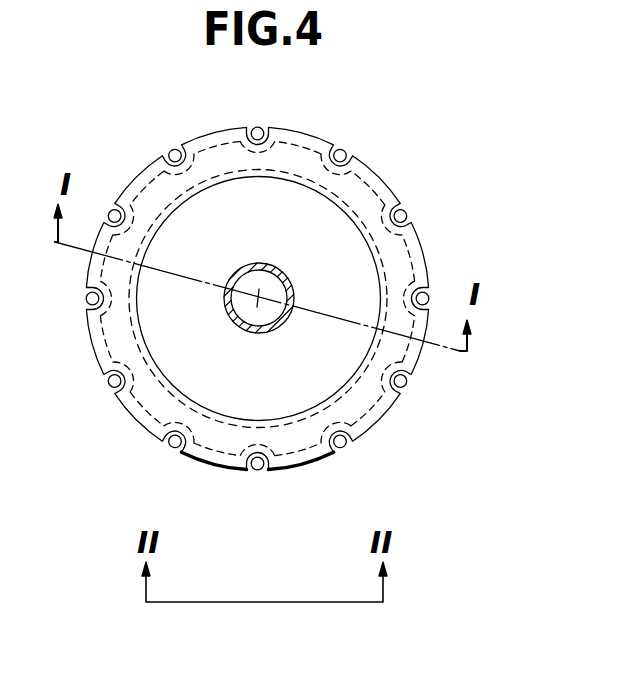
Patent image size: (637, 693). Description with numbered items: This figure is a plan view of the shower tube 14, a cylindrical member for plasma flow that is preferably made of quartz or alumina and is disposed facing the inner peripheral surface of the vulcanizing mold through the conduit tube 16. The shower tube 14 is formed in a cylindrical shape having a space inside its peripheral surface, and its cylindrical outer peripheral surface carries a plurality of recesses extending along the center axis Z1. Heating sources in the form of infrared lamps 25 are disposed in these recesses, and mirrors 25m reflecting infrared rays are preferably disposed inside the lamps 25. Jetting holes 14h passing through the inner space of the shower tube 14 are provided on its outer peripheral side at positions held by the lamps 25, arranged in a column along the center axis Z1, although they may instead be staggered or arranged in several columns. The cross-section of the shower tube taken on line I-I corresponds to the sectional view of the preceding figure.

The shower tube 14 is at (365, 164).
The jetting holes 14h is at (215, 467).
The conduit tube 16 is at (266, 263).
The infrared lamps 25 is at (171, 445).
The mirrors 25m is at (162, 414).
The center axis Z1 is at (262, 295).